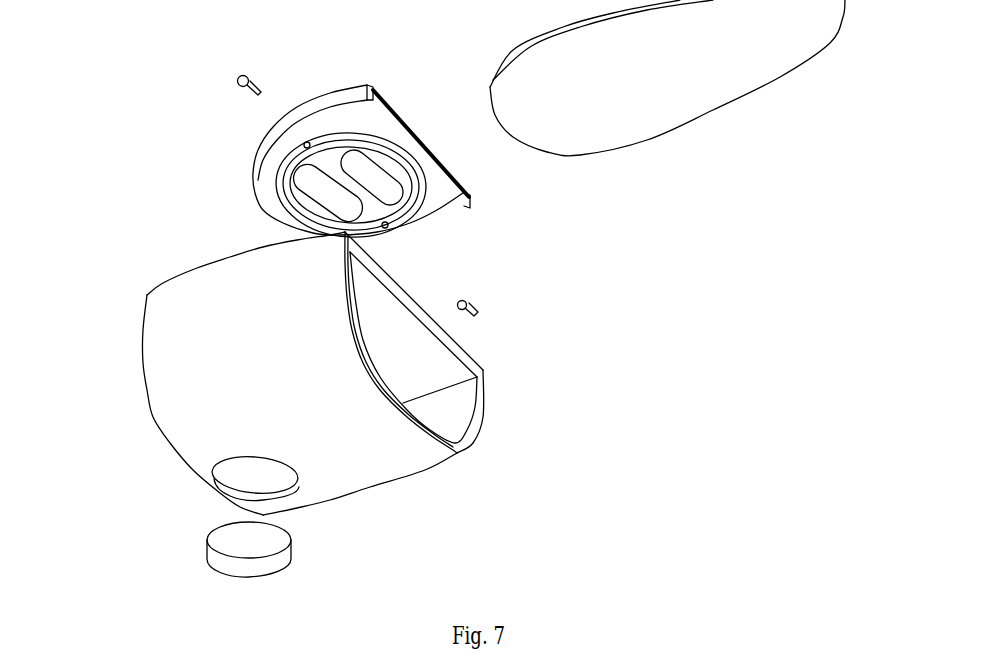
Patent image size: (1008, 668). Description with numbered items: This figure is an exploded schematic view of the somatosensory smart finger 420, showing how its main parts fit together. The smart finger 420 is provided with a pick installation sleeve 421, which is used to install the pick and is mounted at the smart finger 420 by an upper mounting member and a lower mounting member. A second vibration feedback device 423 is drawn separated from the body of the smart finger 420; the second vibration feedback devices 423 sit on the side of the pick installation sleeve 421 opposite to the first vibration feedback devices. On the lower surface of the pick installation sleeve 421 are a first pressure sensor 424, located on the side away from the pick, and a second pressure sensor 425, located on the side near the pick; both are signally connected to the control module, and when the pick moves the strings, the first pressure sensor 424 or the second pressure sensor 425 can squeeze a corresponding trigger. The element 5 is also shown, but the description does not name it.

The strap 5 is at (733, 63).
The smart finger 420 is at (203, 393).
The pick installation sleeve 421 is at (292, 117).
The second vibration feedback device 423 is at (245, 562).
The first pressure sensor 424 is at (307, 193).
The second pressure sensor 425 is at (383, 184).